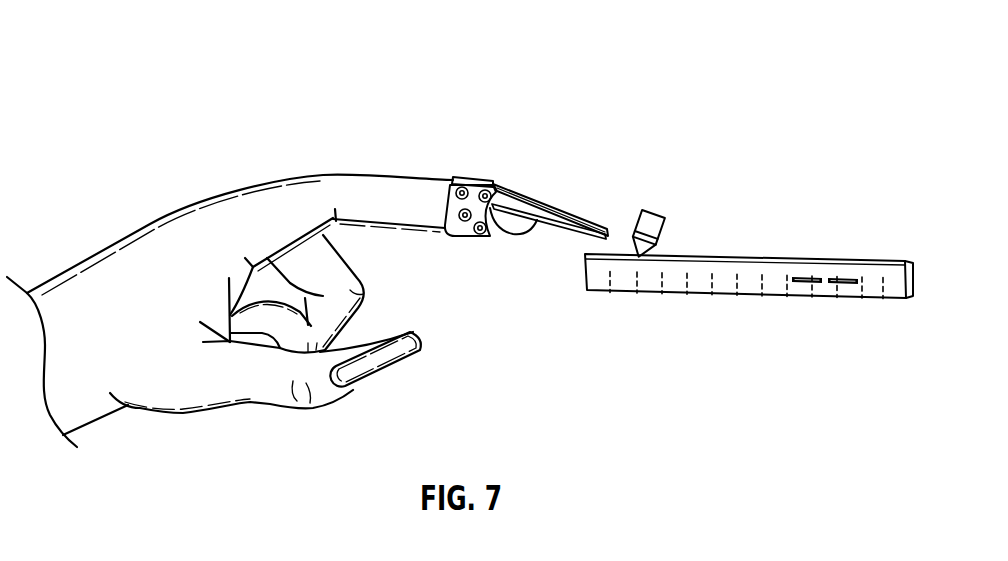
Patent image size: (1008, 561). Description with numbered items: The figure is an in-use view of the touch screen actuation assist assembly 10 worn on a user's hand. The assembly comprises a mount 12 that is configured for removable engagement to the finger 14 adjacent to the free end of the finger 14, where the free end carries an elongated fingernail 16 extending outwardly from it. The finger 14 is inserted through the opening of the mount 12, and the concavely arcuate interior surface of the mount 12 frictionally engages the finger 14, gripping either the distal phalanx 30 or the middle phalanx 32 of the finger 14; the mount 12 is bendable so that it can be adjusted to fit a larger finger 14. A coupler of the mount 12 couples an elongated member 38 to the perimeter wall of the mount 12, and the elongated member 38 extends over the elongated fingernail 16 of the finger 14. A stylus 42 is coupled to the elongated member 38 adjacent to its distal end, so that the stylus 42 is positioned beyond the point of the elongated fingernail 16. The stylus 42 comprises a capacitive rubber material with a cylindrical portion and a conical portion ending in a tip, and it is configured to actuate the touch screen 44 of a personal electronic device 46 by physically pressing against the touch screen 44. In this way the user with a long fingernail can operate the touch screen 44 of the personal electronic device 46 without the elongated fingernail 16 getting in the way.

The touch screen actuation assist assembly 10 is at (501, 102).
The mount 12 is at (455, 244).
The finger 14 is at (313, 155).
The elongated fingernail 16 is at (570, 229).
The distal phalanx 30 is at (498, 230).
The middle phalanx 32 is at (398, 193).
The elongated member 38 is at (555, 190).
The stylus 42 is at (680, 192).
The touch screen 44 is at (848, 261).
The personal electronic device 46 is at (744, 285).